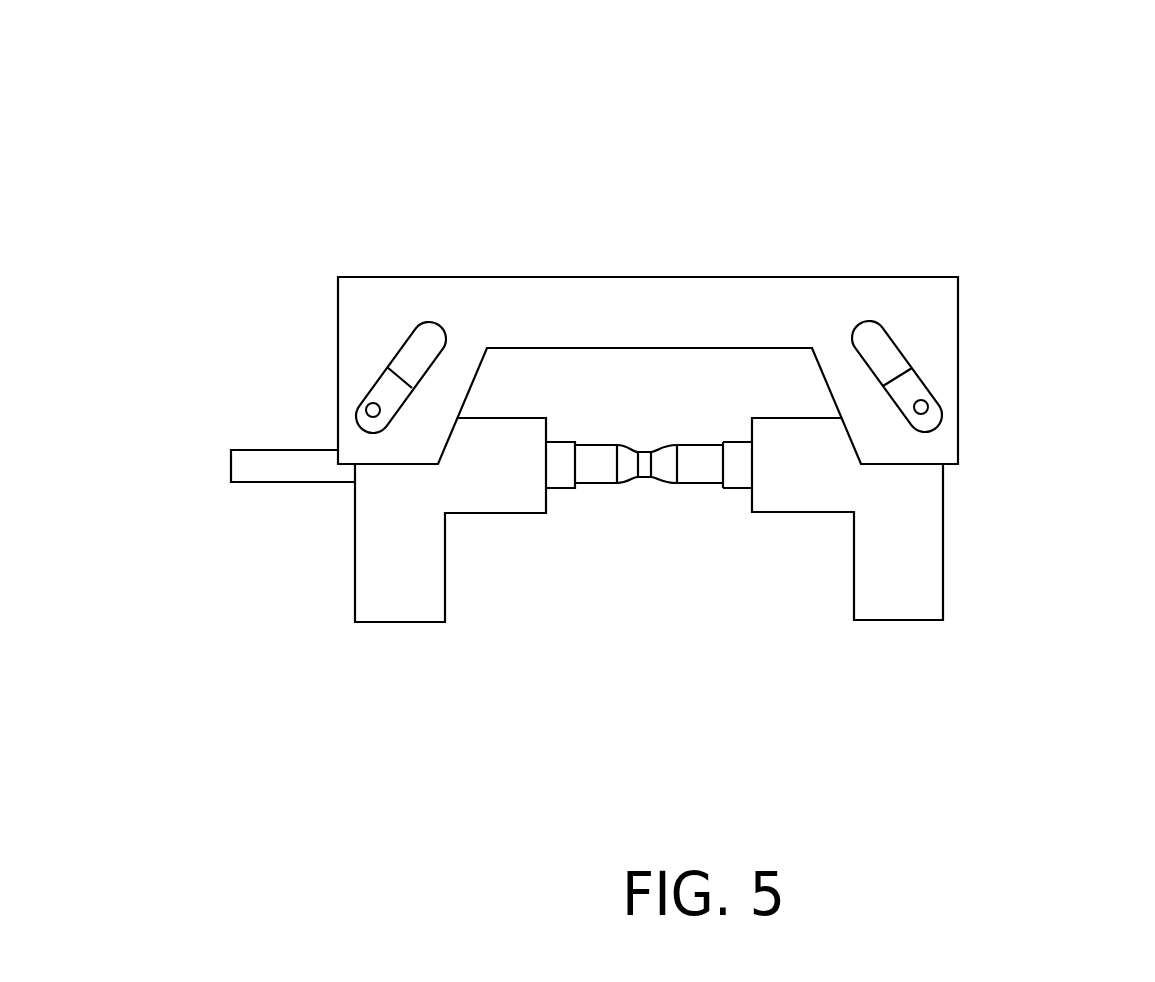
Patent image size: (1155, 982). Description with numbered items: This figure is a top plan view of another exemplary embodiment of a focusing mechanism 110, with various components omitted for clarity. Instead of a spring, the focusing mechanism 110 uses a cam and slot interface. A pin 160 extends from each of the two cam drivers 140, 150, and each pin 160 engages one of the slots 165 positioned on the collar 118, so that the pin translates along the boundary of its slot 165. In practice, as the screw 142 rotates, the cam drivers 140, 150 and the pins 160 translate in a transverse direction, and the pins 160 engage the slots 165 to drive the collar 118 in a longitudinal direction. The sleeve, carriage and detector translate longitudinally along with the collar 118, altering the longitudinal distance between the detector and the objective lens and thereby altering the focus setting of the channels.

The focusing mechanism 110 is at (397, 80).
The collar 118 is at (694, 305).
The cam driver 140 is at (375, 566).
The screw 142 is at (250, 466).
The cam driver 150 is at (905, 598).
The pin 160 is at (373, 410).
The slot 165 is at (410, 325).